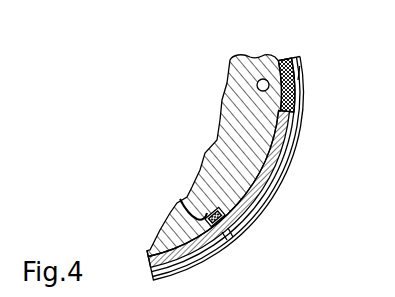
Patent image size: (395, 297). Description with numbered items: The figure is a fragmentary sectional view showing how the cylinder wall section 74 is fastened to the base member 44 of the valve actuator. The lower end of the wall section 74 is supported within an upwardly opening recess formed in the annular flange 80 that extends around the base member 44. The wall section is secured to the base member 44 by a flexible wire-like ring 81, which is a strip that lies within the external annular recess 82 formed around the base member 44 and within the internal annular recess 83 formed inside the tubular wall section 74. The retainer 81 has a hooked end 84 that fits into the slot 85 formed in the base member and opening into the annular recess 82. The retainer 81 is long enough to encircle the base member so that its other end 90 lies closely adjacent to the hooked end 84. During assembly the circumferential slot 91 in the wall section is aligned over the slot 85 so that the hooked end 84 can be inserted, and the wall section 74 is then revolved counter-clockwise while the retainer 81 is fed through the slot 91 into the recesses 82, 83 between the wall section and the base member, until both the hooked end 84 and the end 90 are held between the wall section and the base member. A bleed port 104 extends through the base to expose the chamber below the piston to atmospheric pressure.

The base member 44 is at (232, 110).
The cylinder wall section 74 is at (292, 94).
The annular flange 80 is at (298, 70).
The flexible wire-like ring 81 is at (258, 181).
The external annular recess 82 is at (283, 57).
The internal annular recess 83 is at (222, 238).
The hooked end 84 is at (180, 199).
The slot 85 is at (216, 207).
The other end of the retainer 90 is at (193, 265).
The circumferential slot 91 is at (301, 128).
The bleed port 104 is at (257, 88).